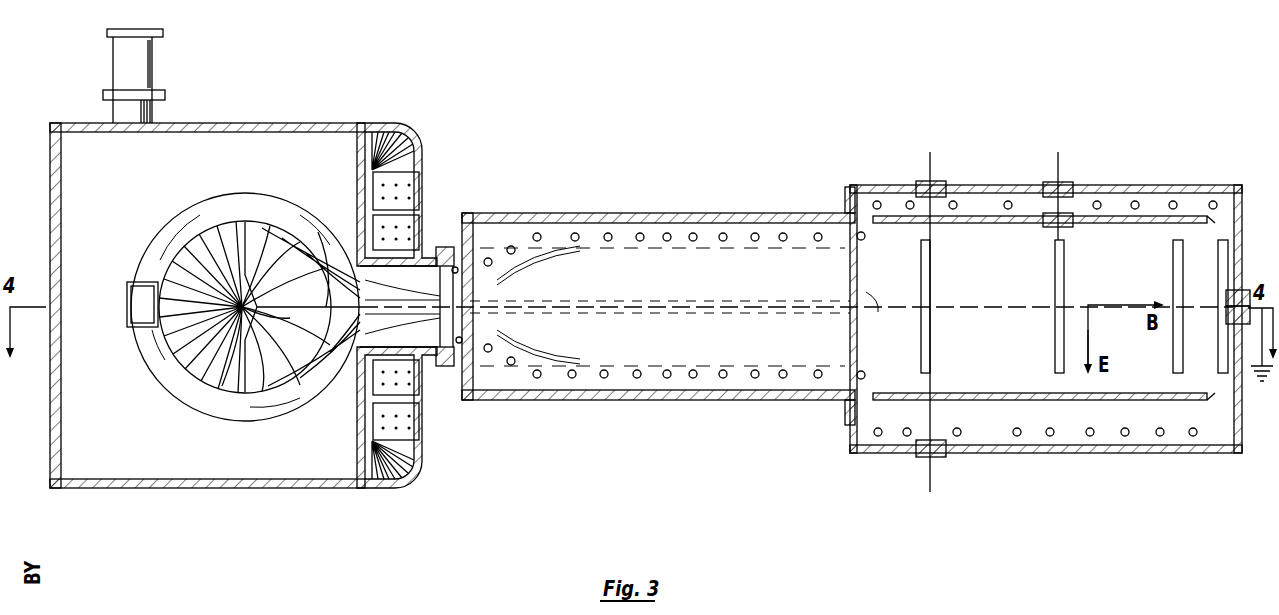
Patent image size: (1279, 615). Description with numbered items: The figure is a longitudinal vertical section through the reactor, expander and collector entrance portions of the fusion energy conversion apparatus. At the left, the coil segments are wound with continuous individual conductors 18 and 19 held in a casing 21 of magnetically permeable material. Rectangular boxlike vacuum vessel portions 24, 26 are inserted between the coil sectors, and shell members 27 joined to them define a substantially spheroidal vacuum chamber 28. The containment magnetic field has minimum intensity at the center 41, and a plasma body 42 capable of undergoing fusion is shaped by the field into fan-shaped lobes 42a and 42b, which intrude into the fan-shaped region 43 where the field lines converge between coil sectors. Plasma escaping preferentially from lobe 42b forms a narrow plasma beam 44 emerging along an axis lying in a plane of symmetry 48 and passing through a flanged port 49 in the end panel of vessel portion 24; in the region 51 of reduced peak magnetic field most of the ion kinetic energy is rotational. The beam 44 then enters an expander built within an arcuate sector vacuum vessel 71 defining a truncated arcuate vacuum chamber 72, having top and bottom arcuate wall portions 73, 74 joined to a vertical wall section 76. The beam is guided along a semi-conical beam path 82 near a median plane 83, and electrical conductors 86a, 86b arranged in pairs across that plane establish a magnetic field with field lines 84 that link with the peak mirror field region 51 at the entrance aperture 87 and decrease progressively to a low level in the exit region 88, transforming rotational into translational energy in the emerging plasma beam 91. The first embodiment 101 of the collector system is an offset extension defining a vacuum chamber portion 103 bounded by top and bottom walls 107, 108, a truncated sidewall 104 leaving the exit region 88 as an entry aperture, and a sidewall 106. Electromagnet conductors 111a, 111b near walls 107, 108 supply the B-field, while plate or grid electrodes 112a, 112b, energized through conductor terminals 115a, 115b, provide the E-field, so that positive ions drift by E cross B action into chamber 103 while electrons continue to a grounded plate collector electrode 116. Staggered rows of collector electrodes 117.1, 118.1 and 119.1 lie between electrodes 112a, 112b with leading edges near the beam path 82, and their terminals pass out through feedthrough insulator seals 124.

The continuous individual conductor 18 is at (412, 186).
The continuous individual conductor 19 is at (382, 245).
The casing 21 is at (421, 215).
The rectangular boxlike vessel portion 24 is at (128, 292).
The rectangular boxlike vessel portion 26 is at (124, 442).
The shell member 27 is at (245, 307).
The spheroidal vacuum chamber 28 is at (177, 375).
The center 41 is at (296, 307).
The plasma body 42 is at (220, 272).
The fan-shaped lobe 42a is at (222, 342).
The fan-shaped lobe 42b is at (290, 318).
The fan-shaped region 43 is at (331, 262).
The plasma beam 44 is at (380, 316).
The plane of symmetry 48 is at (453, 305).
The flanged port 49 is at (440, 367).
The peak magnetic mirror field region 51 is at (398, 275).
The arcuate sector vacuum vessel 71 is at (625, 410).
The truncated arcuate section vacuum chamber 72 is at (772, 277).
The top arcuate sector wall portion 73 is at (670, 213).
The bottom arcuate sector wall portion 74 is at (690, 400).
The vertical wall section 76 is at (609, 277).
The beam path 82 is at (625, 330).
The median plane 83 is at (798, 305).
The magnetic field lines 84 is at (590, 245).
The electrical conductor 86a is at (755, 233).
The electrical conductor 86b is at (783, 380).
The entrance aperture 87 is at (468, 296).
The exit region 88 is at (884, 281).
The plasma beam 91 is at (866, 292).
The collector system 101 is at (1000, 497).
The vacuum chamber portion 103 is at (1012, 293).
The truncated sidewall 104 is at (845, 200).
The sidewall 106 is at (1240, 288).
The top wall 107 is at (1005, 185).
The bottom wall 108 is at (1060, 448).
The electromagnet conductor 111a is at (1135, 201).
The electromagnet conductor 111b is at (1193, 438).
The plate or grid electrode 112a is at (1192, 216).
The plate or grid electrode 112b is at (1208, 400).
The conductor terminal 115a is at (932, 166).
The conductor terminal 115b is at (928, 473).
The plate collector electrode 116 is at (1228, 242).
The collector electrode 117.1 is at (930, 259).
The collector electrode 118.1 is at (1064, 259).
The collector electrode 119.1 is at (1172, 284).
The feedthrough insulator seal 124 is at (920, 182).